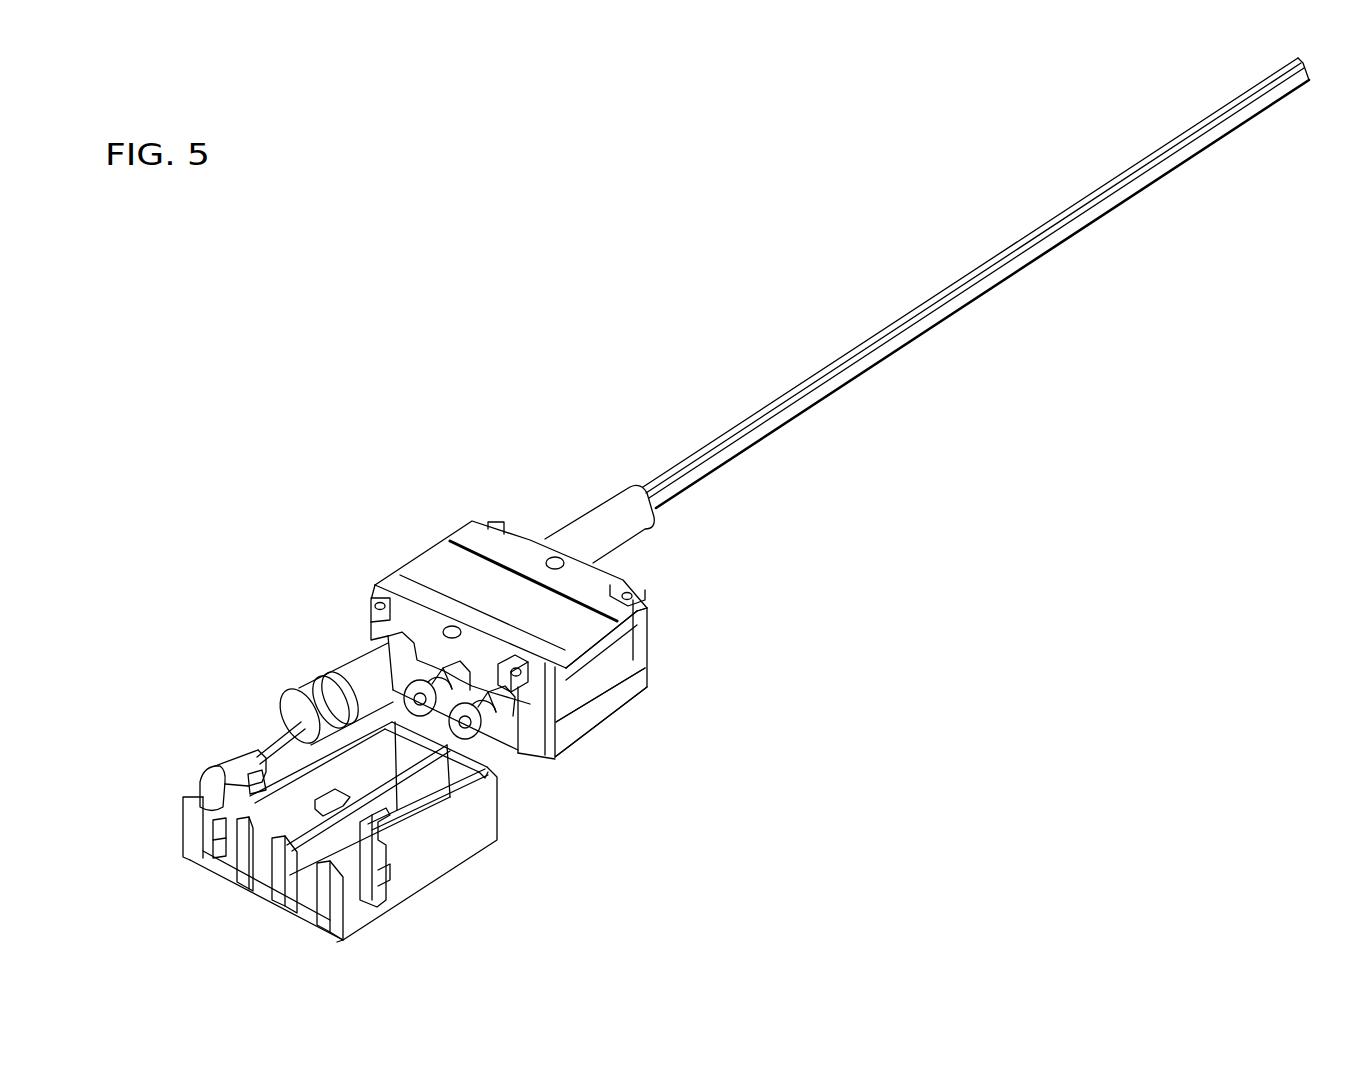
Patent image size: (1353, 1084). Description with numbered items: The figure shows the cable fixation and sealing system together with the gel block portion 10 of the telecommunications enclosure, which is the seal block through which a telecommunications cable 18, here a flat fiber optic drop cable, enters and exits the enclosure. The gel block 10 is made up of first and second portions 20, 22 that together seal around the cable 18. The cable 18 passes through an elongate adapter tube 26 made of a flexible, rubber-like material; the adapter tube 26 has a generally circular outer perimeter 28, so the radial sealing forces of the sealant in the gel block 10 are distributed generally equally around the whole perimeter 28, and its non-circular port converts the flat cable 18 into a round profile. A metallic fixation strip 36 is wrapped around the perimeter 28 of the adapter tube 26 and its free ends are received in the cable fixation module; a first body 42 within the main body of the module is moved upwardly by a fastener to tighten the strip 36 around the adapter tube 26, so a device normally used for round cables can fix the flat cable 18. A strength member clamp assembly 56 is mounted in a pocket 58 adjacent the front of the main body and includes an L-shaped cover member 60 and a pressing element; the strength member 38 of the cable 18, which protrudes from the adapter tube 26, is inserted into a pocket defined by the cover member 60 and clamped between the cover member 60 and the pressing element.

The gel block portion 10 is at (660, 586).
The telecommunications cable 18 is at (910, 308).
The first portion 20 is at (617, 645).
The second portion 22 is at (617, 687).
The adapter tube 26 is at (607, 515).
The outer perimeter 28 is at (563, 523).
The fixation strip 36 is at (340, 683).
The strength member 38 is at (283, 737).
The first body 42 is at (343, 743).
The strength member clamp assembly 56 is at (180, 768).
The pocket 58 is at (262, 770).
The L-shaped cover member 60 is at (223, 768).